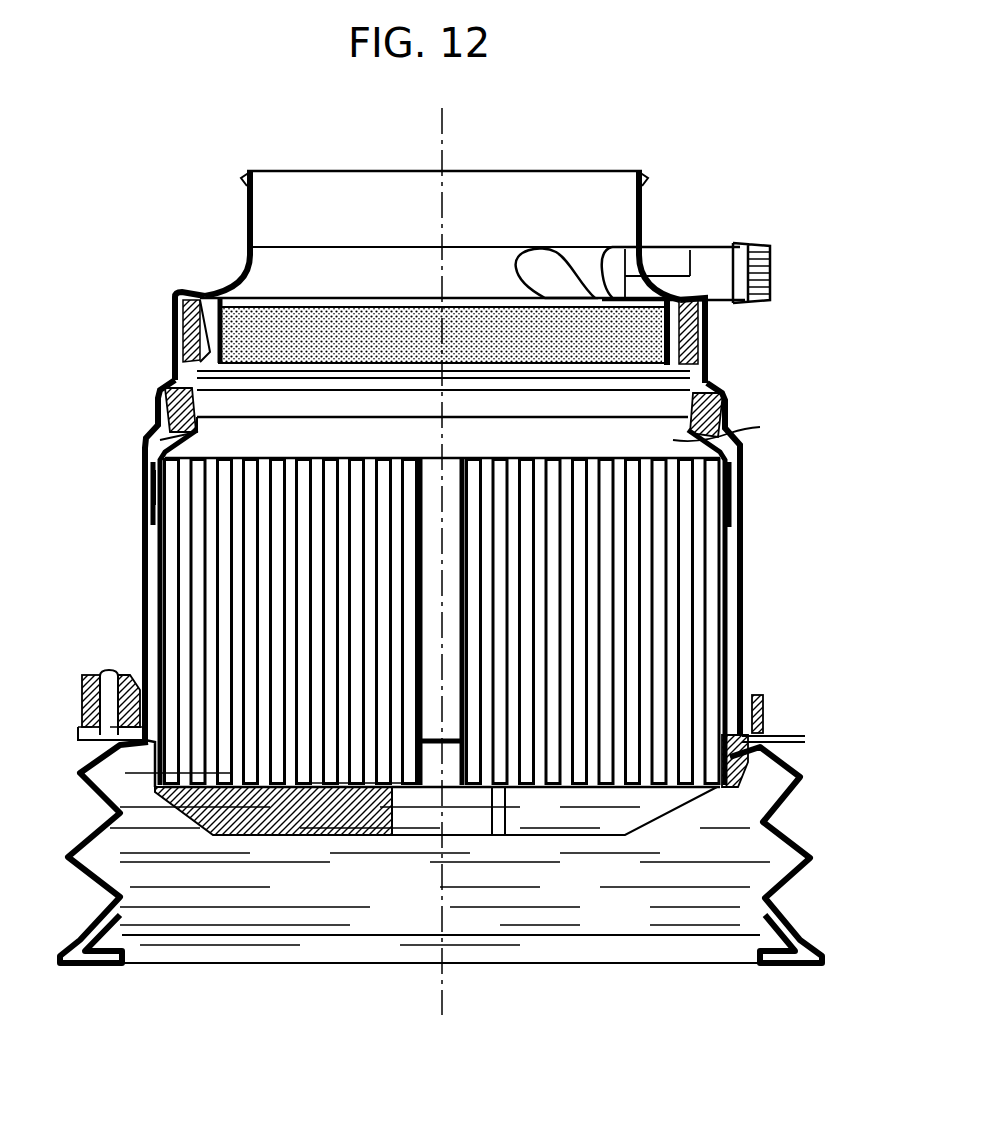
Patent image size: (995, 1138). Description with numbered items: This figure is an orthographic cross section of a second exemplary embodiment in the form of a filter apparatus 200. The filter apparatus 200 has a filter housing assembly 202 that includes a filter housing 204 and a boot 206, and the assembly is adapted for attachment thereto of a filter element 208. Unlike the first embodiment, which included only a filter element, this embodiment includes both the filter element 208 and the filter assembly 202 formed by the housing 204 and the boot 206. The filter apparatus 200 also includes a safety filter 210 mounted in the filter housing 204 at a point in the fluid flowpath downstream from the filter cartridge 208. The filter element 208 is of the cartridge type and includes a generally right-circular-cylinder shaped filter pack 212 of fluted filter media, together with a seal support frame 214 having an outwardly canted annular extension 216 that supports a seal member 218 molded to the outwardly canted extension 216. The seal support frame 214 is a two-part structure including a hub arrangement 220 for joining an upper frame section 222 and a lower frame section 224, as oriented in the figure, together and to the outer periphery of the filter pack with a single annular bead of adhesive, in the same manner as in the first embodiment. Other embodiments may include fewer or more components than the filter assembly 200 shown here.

The filter apparatus 200 is at (718, 196).
The filter housing assembly 202 is at (517, 583).
The filter housing 204 is at (745, 493).
The boot 206 is at (806, 843).
The filter element 208 is at (723, 657).
The safety filter 210 is at (662, 328).
The filter pack 212 is at (713, 615).
The seal support frame 214 is at (745, 432).
The outwardly canted annular extension 216 is at (742, 410).
The seal member 218 is at (727, 390).
The hub arrangement 220 is at (730, 527).
The upper frame section 222 is at (147, 487).
The lower frame section 224 is at (148, 632).